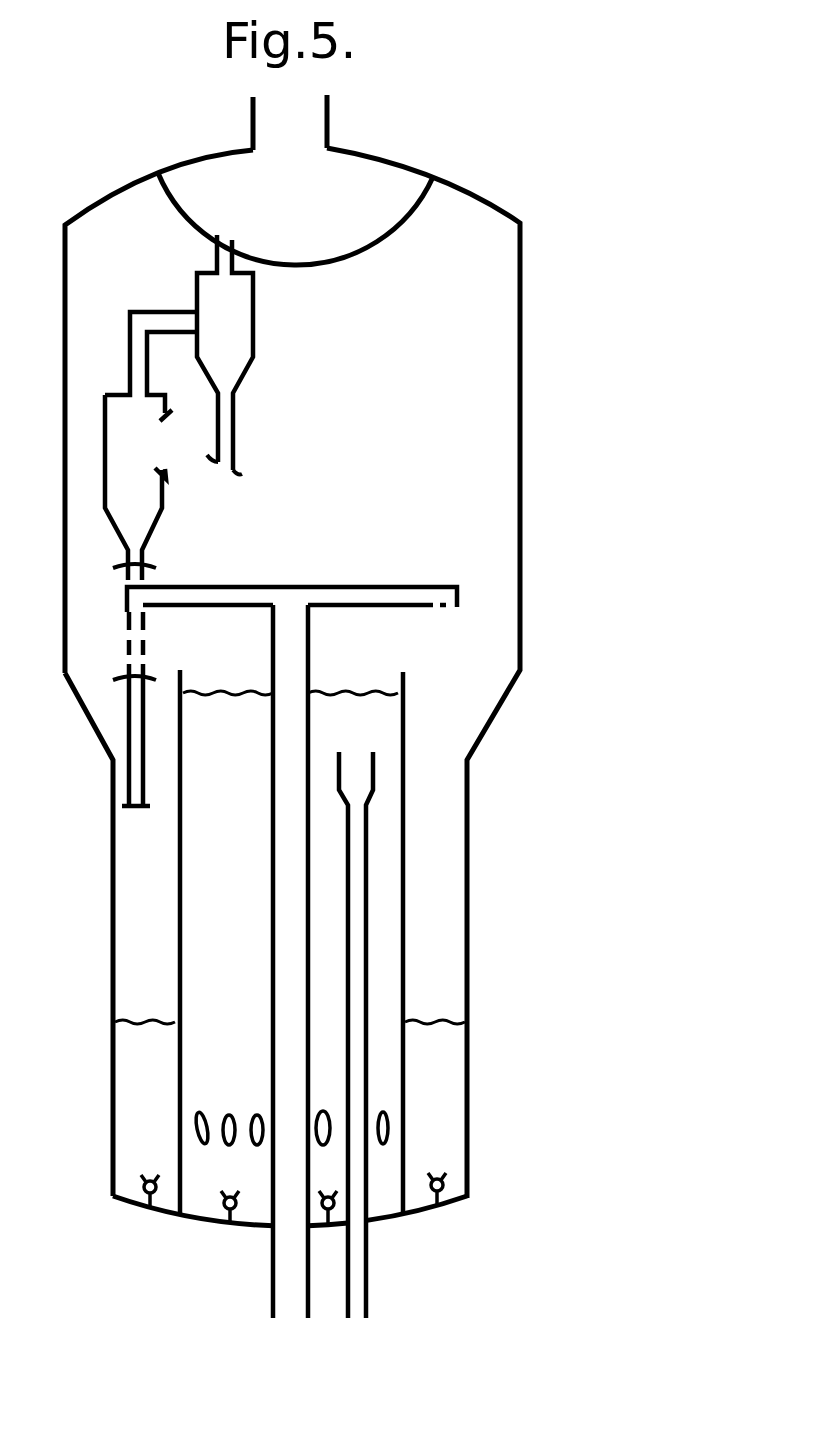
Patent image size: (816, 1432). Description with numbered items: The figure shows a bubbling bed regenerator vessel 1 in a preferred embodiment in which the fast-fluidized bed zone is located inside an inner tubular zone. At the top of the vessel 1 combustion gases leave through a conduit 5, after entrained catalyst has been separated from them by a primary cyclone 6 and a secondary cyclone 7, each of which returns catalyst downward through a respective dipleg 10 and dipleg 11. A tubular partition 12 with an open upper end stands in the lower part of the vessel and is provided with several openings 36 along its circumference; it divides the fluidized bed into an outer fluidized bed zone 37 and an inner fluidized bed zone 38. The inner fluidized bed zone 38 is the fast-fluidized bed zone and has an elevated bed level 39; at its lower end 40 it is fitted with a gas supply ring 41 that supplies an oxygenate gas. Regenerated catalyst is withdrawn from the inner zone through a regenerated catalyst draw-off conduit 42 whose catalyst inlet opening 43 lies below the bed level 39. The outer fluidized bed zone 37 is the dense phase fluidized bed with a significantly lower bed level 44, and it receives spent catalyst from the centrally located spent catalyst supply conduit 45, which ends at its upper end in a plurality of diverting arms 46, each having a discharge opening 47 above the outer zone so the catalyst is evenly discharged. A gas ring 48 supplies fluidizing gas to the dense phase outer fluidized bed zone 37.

The regenerator vessel 1 is at (468, 968).
The conduit 5 is at (330, 130).
The primary cyclone 6 is at (166, 490).
The secondary cyclone 7 is at (254, 328).
The dipleg 10 is at (128, 780).
The dipleg 11 is at (234, 428).
The tubular partition 12 is at (405, 898).
The openings 36 is at (210, 1115).
The outer fluidized bed zone 37 is at (147, 1118).
The inner fluidized bed zone 38 is at (245, 968).
The bed level 39 is at (348, 692).
The lower end 40 is at (388, 1088).
The gas supply ring 41 is at (228, 1215).
The regenerated catalyst draw-off conduit 42 is at (347, 1020).
The catalyst inlet opening 43 is at (356, 762).
The bed level 44 is at (434, 1021).
The spent catalyst supply conduit 45 is at (272, 847).
The diverting arms 46 is at (383, 587).
The discharge opening 47 is at (447, 608).
The gas ring 48 is at (145, 1200).